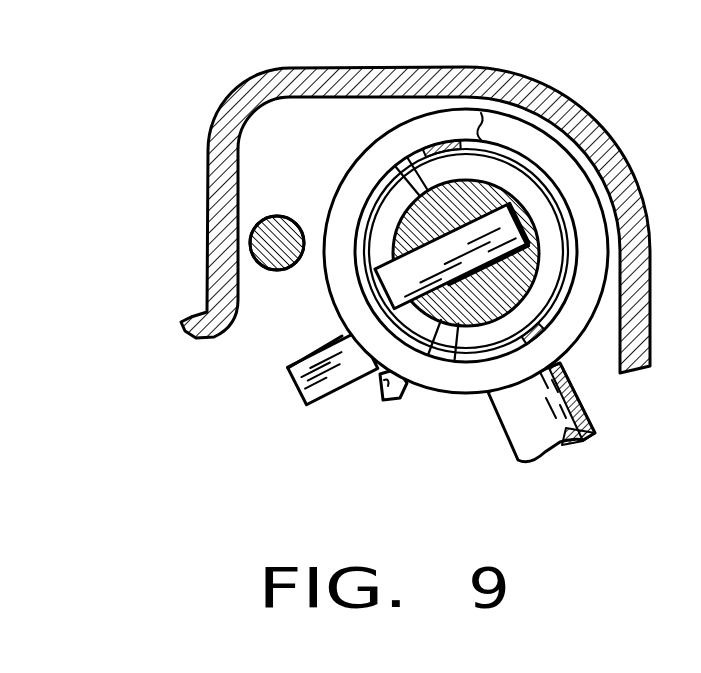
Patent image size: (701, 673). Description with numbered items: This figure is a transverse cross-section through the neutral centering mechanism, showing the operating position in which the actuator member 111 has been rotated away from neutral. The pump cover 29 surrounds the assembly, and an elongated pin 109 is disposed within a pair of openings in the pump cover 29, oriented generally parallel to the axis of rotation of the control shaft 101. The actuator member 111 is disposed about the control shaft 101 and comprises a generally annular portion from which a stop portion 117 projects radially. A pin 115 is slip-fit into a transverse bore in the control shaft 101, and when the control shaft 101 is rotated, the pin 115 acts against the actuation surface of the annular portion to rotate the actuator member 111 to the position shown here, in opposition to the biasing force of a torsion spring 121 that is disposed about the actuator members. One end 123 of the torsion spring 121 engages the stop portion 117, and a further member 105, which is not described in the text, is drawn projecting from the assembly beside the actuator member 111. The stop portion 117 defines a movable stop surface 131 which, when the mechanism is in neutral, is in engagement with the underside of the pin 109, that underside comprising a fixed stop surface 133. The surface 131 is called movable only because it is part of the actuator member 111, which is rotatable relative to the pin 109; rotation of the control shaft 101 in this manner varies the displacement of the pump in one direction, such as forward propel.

The pump cover 29 is at (396, 88).
The control shaft 101 is at (430, 218).
The tubular member 105 is at (590, 410).
The pin 109 is at (250, 253).
The actuator member 111 is at (457, 333).
The pin 115 is at (501, 237).
The stop portion 117 is at (293, 374).
The torsion spring 121 is at (541, 146).
The end 123 is at (379, 388).
The movable stop surface 131 is at (300, 347).
The fixed stop surface 133 is at (271, 272).